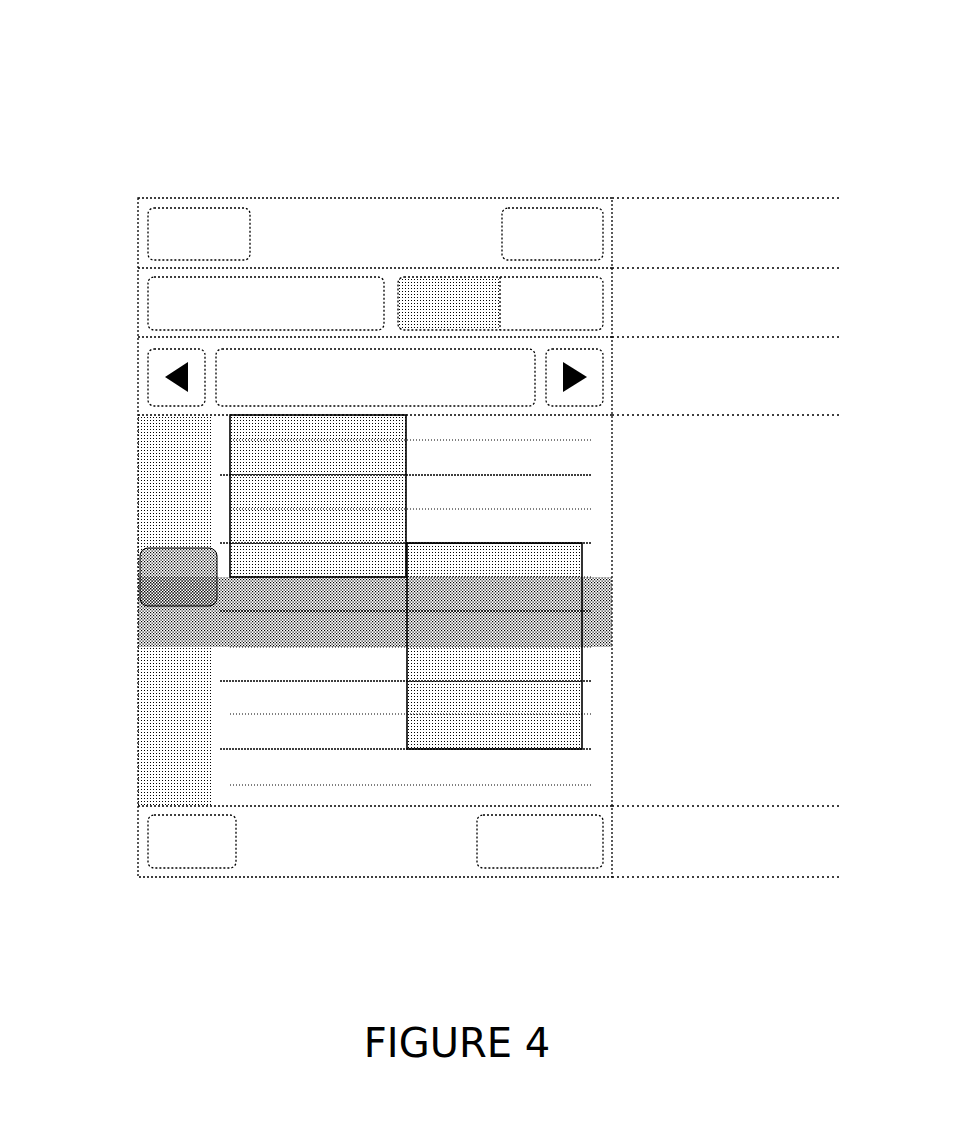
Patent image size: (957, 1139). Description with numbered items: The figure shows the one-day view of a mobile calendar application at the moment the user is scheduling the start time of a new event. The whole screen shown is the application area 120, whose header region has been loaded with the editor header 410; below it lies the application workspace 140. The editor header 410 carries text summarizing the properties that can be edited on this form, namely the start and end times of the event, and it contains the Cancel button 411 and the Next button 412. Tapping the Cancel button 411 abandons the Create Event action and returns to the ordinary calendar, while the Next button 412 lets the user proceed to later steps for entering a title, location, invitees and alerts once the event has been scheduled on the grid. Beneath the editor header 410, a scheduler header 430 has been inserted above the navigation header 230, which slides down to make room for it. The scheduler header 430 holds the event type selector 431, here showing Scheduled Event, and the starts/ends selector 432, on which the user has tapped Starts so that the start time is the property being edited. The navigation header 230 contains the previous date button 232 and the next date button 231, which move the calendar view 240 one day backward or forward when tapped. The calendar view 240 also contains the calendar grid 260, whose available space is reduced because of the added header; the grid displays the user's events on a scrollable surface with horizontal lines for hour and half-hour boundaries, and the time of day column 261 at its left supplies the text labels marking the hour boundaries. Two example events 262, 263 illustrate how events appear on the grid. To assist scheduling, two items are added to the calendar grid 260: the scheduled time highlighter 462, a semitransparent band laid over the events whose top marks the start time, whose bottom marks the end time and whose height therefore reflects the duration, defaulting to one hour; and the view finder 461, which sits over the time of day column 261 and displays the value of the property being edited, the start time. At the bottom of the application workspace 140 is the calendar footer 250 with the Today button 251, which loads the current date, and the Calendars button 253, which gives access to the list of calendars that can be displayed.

The application area 120 is at (454, 483).
The application workspace 140 is at (805, 272).
The editor header 410 is at (492, 184).
The Cancel button 411 is at (199, 213).
The Next button 412 is at (551, 213).
The scheduler header 430 is at (450, 218).
The event type selector 431 is at (263, 297).
The starts/ends selector 432 is at (486, 288).
The navigation header 230 is at (379, 316).
The next date button 231 is at (590, 357).
The previous date button 232 is at (158, 360).
The calendar view 240 is at (412, 573).
The calendar grid 260 is at (641, 802).
The time of day column 261 is at (172, 712).
The event 262 is at (318, 496).
The event 263 is at (494, 646).
The view finder 461 is at (155, 595).
The scheduled time highlighter 462 is at (375, 612).
The calendar footer 250 is at (450, 876).
The Today button 251 is at (196, 858).
The Calendars button 253 is at (541, 858).